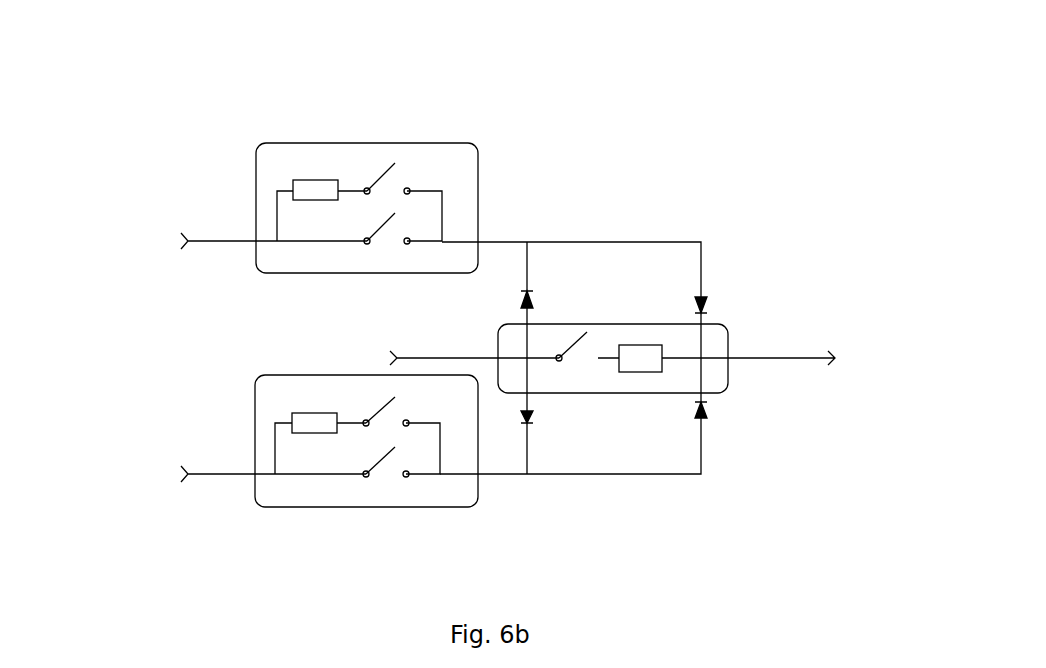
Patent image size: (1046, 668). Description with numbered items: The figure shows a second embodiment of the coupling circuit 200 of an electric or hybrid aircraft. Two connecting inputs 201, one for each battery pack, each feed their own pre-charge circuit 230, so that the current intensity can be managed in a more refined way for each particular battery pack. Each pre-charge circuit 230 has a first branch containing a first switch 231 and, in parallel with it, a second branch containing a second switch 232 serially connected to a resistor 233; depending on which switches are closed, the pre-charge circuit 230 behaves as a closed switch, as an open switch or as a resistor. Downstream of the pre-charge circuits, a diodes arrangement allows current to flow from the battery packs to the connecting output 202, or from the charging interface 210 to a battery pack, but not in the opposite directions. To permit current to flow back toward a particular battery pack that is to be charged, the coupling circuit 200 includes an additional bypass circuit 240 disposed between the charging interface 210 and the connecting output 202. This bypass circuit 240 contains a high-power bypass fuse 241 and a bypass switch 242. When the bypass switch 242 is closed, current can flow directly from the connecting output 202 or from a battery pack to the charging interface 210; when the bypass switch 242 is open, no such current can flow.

The coupling circuit 200 is at (657, 105).
The connecting input 201 is at (185, 246).
The connecting output 202 is at (833, 358).
The charging interface 210 is at (393, 358).
The pre-charge circuit 230 is at (415, 143).
The first switch 231 is at (382, 228).
The second switch 232 is at (385, 162).
The resistor 233 is at (318, 180).
The bypass circuit 240 is at (729, 383).
The high-power bypass fuse 241 is at (642, 345).
The bypass switch 242 is at (572, 347).